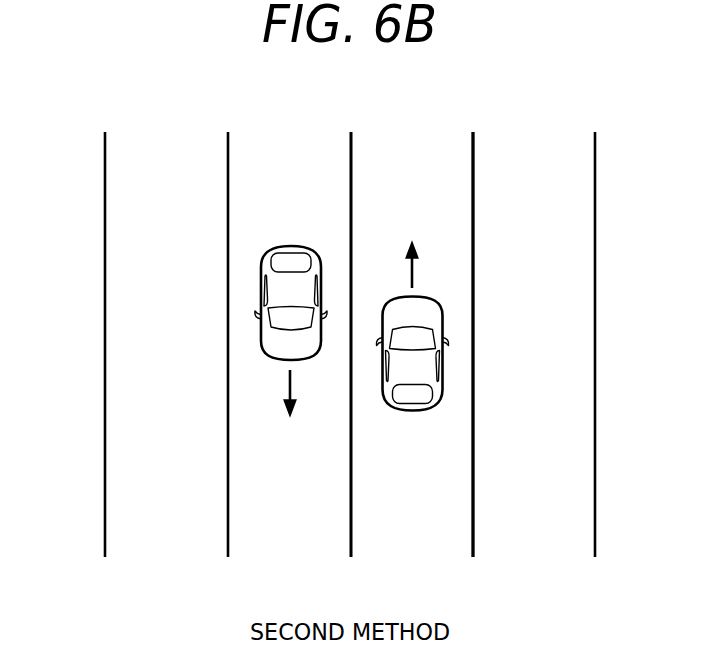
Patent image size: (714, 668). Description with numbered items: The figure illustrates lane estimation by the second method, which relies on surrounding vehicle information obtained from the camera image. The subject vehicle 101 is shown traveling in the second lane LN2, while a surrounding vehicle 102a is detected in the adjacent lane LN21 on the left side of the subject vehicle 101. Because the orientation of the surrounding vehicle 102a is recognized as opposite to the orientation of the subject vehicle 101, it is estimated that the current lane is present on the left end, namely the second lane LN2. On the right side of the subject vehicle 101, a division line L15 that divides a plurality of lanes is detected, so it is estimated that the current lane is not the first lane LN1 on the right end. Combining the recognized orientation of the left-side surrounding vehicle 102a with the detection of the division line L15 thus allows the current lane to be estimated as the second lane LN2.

The subject vehicle 101 is at (440, 331).
The surrounding vehicle 102a is at (262, 298).
The first lane LN1 is at (540, 157).
The second lane LN2 is at (425, 157).
The adjacent lane LN21 is at (291, 157).
The division line L15 is at (473, 532).